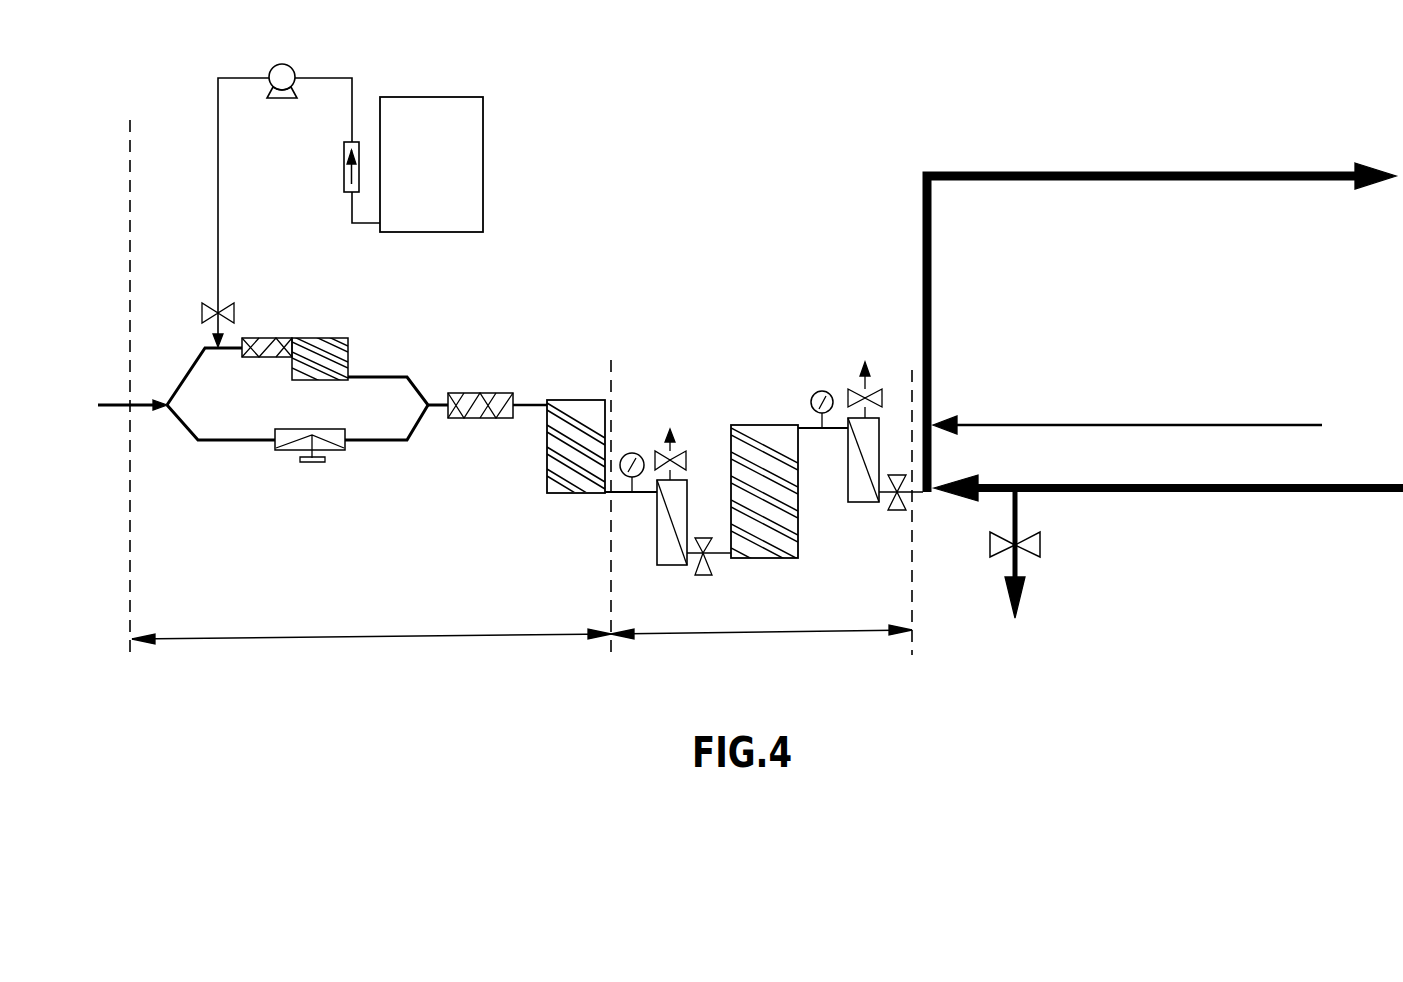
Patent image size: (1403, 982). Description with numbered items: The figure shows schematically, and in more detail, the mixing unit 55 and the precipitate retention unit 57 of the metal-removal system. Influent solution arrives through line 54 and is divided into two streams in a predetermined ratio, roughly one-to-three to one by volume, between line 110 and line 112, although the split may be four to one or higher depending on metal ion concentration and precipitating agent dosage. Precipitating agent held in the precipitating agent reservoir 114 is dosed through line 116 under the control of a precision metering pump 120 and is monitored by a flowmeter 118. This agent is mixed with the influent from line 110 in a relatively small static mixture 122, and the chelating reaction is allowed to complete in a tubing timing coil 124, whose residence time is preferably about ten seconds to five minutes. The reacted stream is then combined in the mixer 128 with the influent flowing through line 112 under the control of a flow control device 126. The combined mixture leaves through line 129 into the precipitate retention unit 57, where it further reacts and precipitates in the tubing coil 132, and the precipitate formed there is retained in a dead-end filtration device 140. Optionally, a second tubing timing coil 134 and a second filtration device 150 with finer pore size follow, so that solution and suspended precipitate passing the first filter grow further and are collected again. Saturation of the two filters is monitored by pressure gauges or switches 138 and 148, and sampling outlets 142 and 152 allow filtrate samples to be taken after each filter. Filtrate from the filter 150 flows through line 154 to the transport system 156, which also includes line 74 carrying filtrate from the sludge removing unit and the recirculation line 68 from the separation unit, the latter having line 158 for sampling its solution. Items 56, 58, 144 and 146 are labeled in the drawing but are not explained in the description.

The line 54 is at (110, 405).
The mixing unit 55 is at (365, 635).
The connecting line 56 is at (625, 495).
The precipitate retention unit 57 is at (798, 628).
The line to the tank 58 is at (1145, 180).
The recirculation line 68 is at (1068, 488).
The line 74 is at (1003, 418).
The line 110 is at (192, 367).
The line 112 is at (187, 432).
The precipitating agent reservoir 114 is at (505, 153).
The line 116 is at (375, 87).
The flowmeter 118 is at (344, 167).
The precision metering pump 120 is at (290, 69).
The static mixture 122 is at (270, 337).
The tubing timing coil 124 is at (323, 338).
The flow control device 126 is at (333, 451).
The mixer 128 is at (487, 420).
The line 129 is at (528, 402).
The tubing coil 132 is at (578, 398).
The tubing timing coil 134 is at (755, 425).
The pressure gauge 138 is at (630, 450).
The dead-end filtration device 140 is at (657, 565).
The sampling outlet 142 is at (675, 448).
The valve 144 is at (720, 557).
The line 146 is at (807, 432).
The pressure gauge 148 is at (813, 391).
The filtration device 150 is at (863, 503).
The sampling outlet 152 is at (872, 383).
The line 154 is at (918, 494).
The transport system 156 is at (1212, 113).
The line 158 is at (1010, 557).